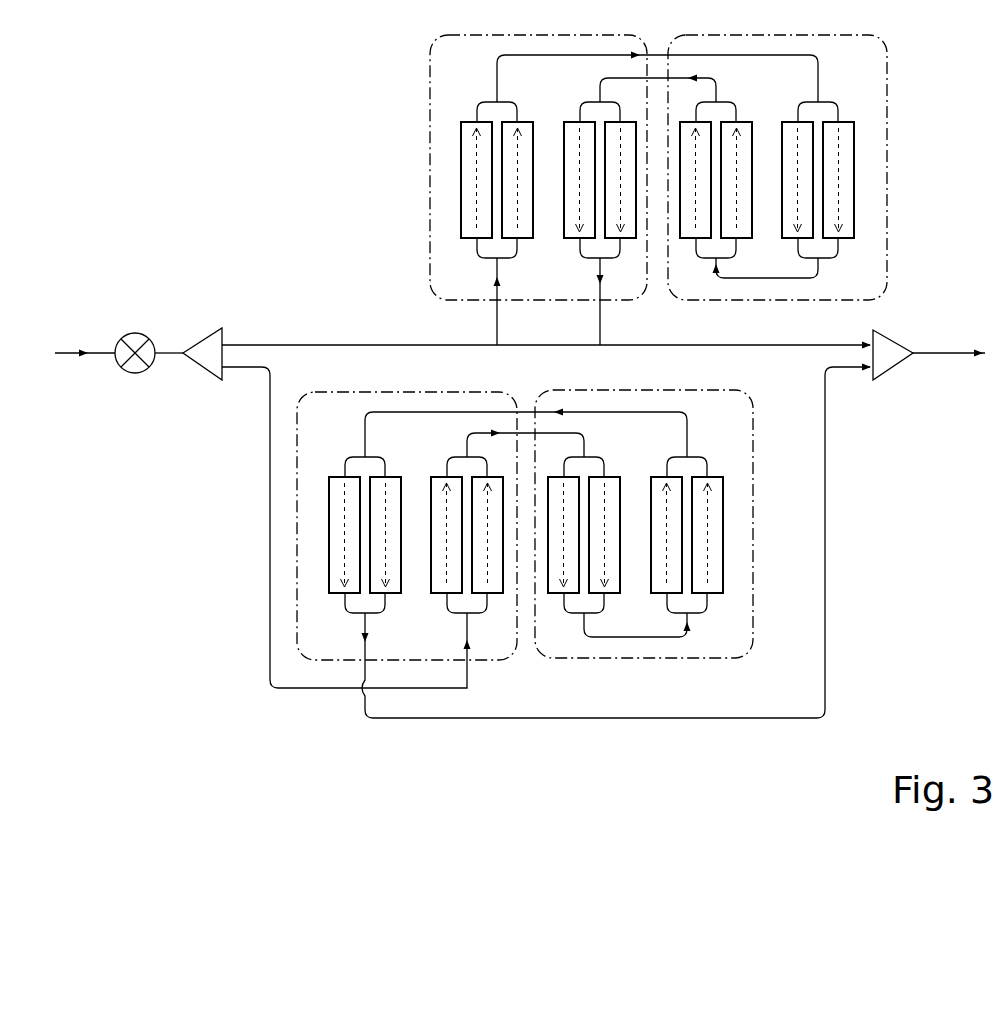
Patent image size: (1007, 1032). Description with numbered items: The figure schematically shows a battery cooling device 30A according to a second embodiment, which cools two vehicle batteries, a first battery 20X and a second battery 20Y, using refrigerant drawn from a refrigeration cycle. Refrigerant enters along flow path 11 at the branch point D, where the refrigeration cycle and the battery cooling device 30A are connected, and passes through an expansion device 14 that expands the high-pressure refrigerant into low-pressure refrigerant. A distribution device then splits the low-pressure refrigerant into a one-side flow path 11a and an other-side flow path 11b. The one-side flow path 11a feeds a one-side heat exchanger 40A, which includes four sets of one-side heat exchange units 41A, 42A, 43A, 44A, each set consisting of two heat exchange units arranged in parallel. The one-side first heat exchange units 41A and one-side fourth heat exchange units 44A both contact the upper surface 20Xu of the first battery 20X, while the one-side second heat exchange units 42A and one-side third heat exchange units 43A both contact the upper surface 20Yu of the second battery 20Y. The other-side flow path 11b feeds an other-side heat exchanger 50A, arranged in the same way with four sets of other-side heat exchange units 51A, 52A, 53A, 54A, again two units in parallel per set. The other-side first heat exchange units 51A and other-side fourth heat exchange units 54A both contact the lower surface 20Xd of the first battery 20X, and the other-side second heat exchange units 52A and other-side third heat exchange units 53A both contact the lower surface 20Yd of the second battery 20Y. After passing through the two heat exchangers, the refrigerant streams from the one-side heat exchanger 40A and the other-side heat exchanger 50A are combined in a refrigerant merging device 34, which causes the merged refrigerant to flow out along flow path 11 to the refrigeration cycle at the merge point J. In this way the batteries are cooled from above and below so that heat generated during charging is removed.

The battery cooling device 30A is at (135, 110).
The one-side heat exchanger 40A is at (404, 66).
The other-side heat exchanger 50A is at (767, 432).
The one-side first heat exchange unit 41A is at (492, 165).
The one-side second heat exchange unit 42A is at (813, 160).
The one-side third heat exchange unit 43A is at (712, 165).
The one-side fourth heat exchange unit 44A is at (600, 165).
The other-side first heat exchange unit 51A is at (363, 543).
The other-side second heat exchange unit 52A is at (683, 533).
The other-side third heat exchange unit 53A is at (580, 535).
The other-side fourth heat exchange unit 54A is at (465, 543).
The first battery 20X is at (442, 260).
The upper surface of the first battery 20Xu is at (484, 167).
The lower surface of the first battery 20Xd is at (330, 414).
The second battery 20Y is at (865, 267).
The upper surface of the second battery 20Yu is at (822, 167).
The lower surface of the second battery 20Yd is at (705, 643).
The refrigerant flow path 11 is at (63, 358).
The one-side flow path 11a is at (273, 343).
The other-side flow path 11b is at (268, 510).
The expansion device 14 is at (133, 375).
The refrigerant merging device 34 is at (892, 378).
The branch point D is at (85, 345).
The merge point J is at (938, 345).